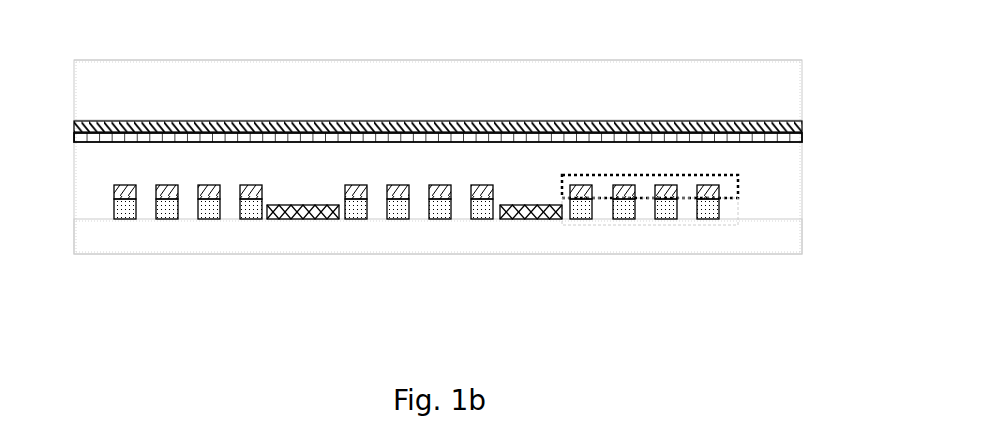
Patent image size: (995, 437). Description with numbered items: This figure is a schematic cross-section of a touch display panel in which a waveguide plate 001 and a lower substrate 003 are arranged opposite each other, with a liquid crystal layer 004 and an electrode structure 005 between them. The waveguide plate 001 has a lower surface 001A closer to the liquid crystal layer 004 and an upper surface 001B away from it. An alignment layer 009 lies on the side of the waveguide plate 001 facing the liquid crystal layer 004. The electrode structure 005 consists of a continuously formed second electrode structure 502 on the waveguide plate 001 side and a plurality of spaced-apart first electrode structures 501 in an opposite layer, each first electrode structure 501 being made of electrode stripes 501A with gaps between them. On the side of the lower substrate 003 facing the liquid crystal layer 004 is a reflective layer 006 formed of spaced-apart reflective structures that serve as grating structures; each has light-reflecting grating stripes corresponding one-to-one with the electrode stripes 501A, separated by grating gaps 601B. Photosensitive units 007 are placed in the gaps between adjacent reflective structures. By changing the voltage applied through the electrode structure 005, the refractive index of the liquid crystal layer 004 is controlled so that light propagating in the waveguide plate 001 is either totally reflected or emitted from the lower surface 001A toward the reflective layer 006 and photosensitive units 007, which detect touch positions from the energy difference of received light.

The waveguide plate 001 is at (802, 82).
The lower surface of the waveguide plate 001A is at (622, 120).
The upper surface of the waveguide plate 001B is at (477, 57).
The second electrode structure 502 is at (802, 129).
The alignment layer 009 is at (185, 140).
The electrode structure 005 is at (498, 105).
The first electrode structures 501 is at (738, 185).
The lower substrate 003 is at (803, 231).
The reflective layer 006 is at (108, 213).
The liquid crystal layer 004 is at (186, 168).
The photosensitive units 007 is at (301, 219).
The electrode stripes 501A is at (581, 190).
The grating gaps 601B is at (641, 208).